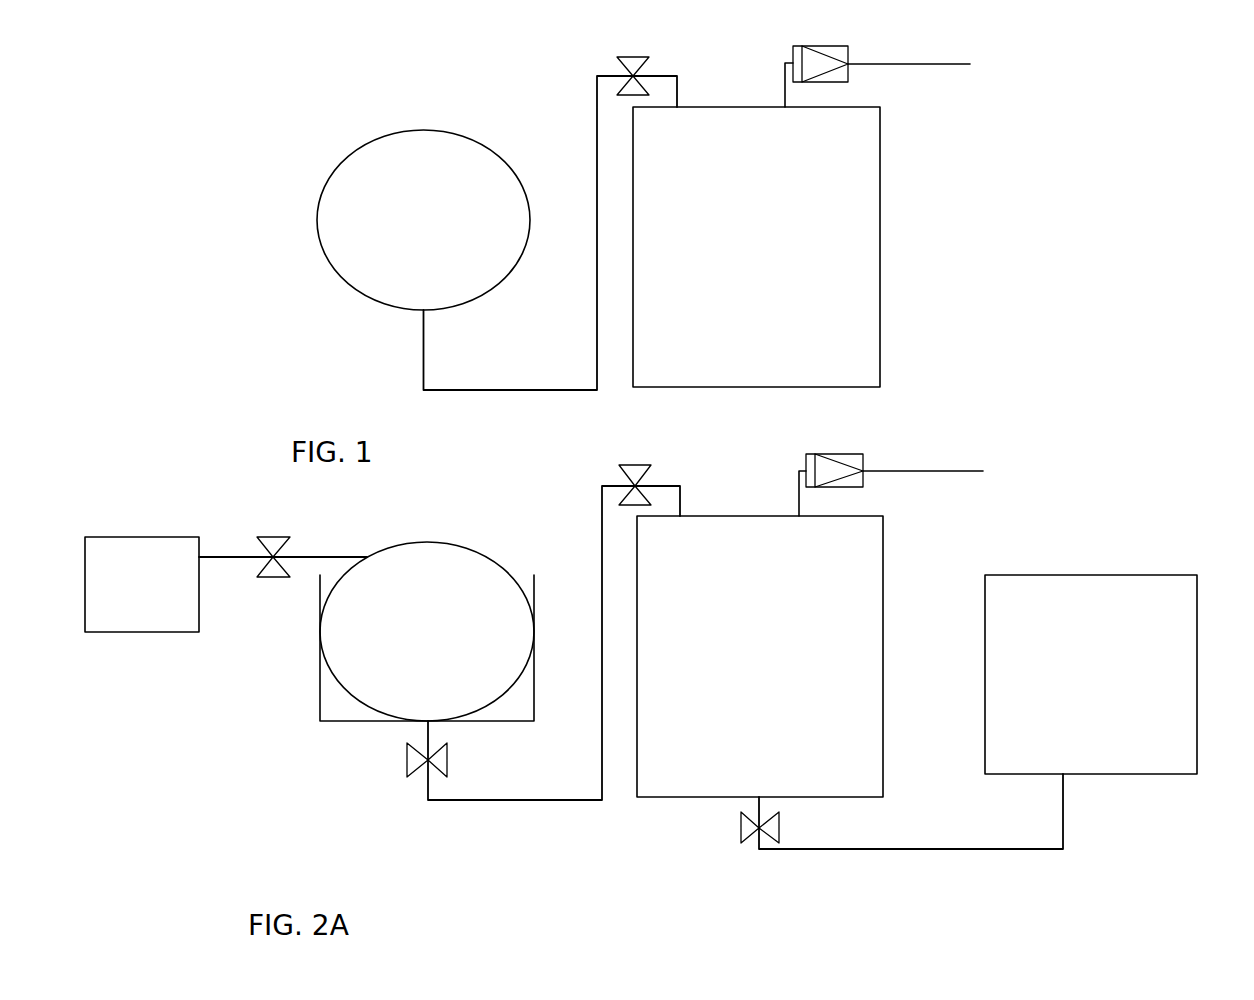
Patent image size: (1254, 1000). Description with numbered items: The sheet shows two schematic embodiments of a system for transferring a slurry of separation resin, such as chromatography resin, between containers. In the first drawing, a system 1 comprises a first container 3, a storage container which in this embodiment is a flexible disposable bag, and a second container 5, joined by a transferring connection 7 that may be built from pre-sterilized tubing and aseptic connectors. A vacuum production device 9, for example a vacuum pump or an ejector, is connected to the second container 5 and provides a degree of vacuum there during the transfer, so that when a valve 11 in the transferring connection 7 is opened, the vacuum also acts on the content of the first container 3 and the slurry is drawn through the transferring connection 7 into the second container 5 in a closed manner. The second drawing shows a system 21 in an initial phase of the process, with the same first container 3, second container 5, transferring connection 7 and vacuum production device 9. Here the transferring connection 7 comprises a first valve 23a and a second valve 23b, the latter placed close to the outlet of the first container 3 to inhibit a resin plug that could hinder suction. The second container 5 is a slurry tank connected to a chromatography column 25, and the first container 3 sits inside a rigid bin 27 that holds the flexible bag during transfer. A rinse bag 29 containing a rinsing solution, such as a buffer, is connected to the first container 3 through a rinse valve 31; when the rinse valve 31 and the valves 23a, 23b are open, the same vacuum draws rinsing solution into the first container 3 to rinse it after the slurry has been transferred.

In FIG. 1, the system 1 is at (524, 105).
In FIG. 1, the first container 3 is at (319, 198).
In FIG. 2A, the first container 3 is at (472, 549).
In FIG. 1, the second container 5 is at (880, 190).
In FIG. 2A, the second container 5 is at (883, 627).
In FIG. 1, the transferring connection 7 is at (562, 390).
In FIG. 2A, the transferring connection 7 is at (553, 802).
In FIG. 1, the vacuum production device 9 is at (850, 50).
In FIG. 2A, the vacuum production device 9 is at (866, 460).
In FIG. 1, the valve 11 is at (617, 57).
In FIG. 2A, the system 21 is at (1048, 450).
In FIG. 2A, the first valve 23a is at (640, 469).
In FIG. 2A, the second valve 23b is at (406, 772).
In FIG. 2A, the chromatography column 25 is at (1118, 575).
In FIG. 2A, the rigid bin 27 is at (320, 675).
In FIG. 2A, the rinse bag 29 is at (138, 632).
In FIG. 2A, the rinse valve 31 is at (272, 537).